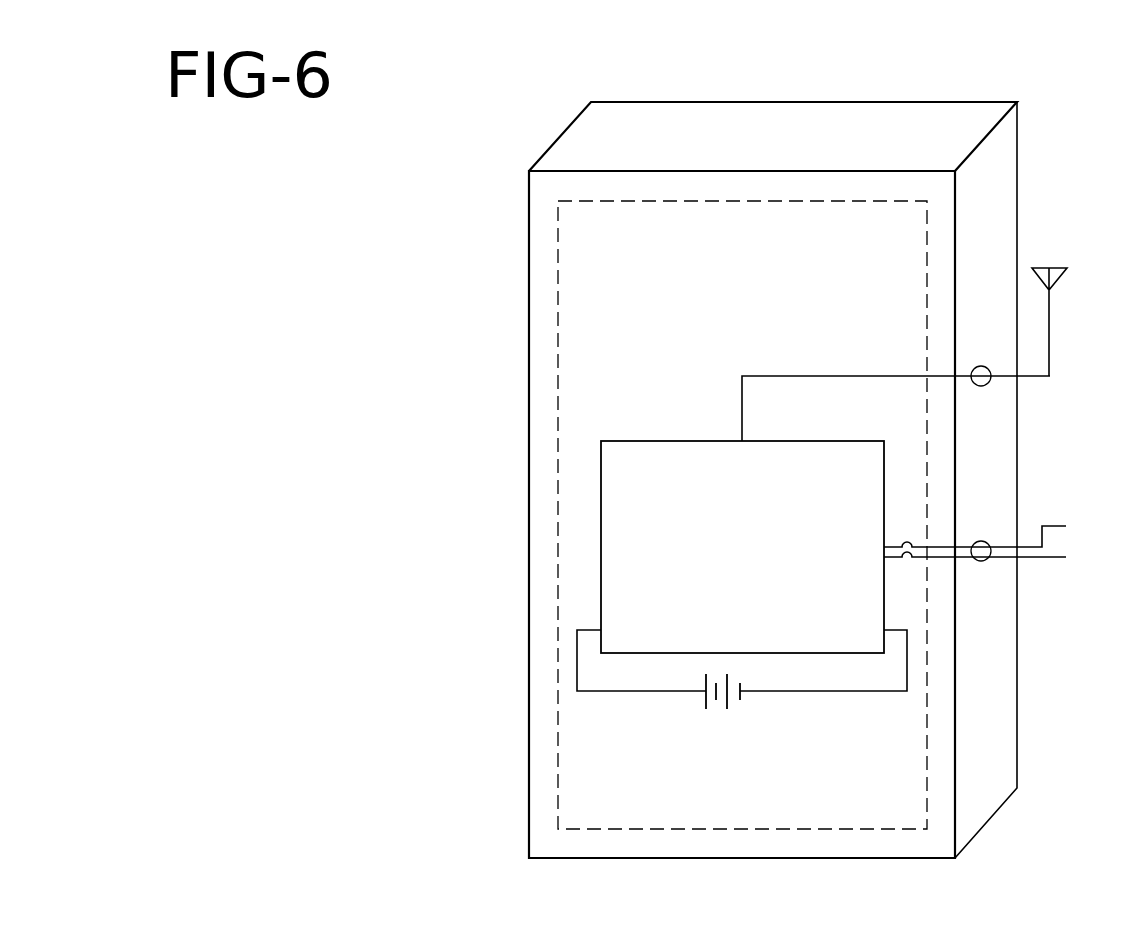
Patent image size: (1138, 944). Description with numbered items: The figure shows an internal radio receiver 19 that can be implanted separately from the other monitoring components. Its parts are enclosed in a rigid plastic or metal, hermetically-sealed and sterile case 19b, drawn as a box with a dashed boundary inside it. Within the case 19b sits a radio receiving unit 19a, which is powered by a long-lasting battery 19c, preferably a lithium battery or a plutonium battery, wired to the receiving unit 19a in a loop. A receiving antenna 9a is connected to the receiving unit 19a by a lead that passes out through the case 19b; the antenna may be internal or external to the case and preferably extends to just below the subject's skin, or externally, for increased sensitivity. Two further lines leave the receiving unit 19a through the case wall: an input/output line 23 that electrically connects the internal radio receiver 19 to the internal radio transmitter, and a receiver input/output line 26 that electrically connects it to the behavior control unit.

The internal radio receiver 19 is at (960, 141).
The radio receiving unit 19a is at (608, 600).
The case 19b is at (995, 743).
The long-lasting battery 19c is at (700, 704).
The receiving antenna 9a is at (1058, 266).
The input/output line 23 is at (1072, 520).
The receiver input/output line 26 is at (1072, 551).